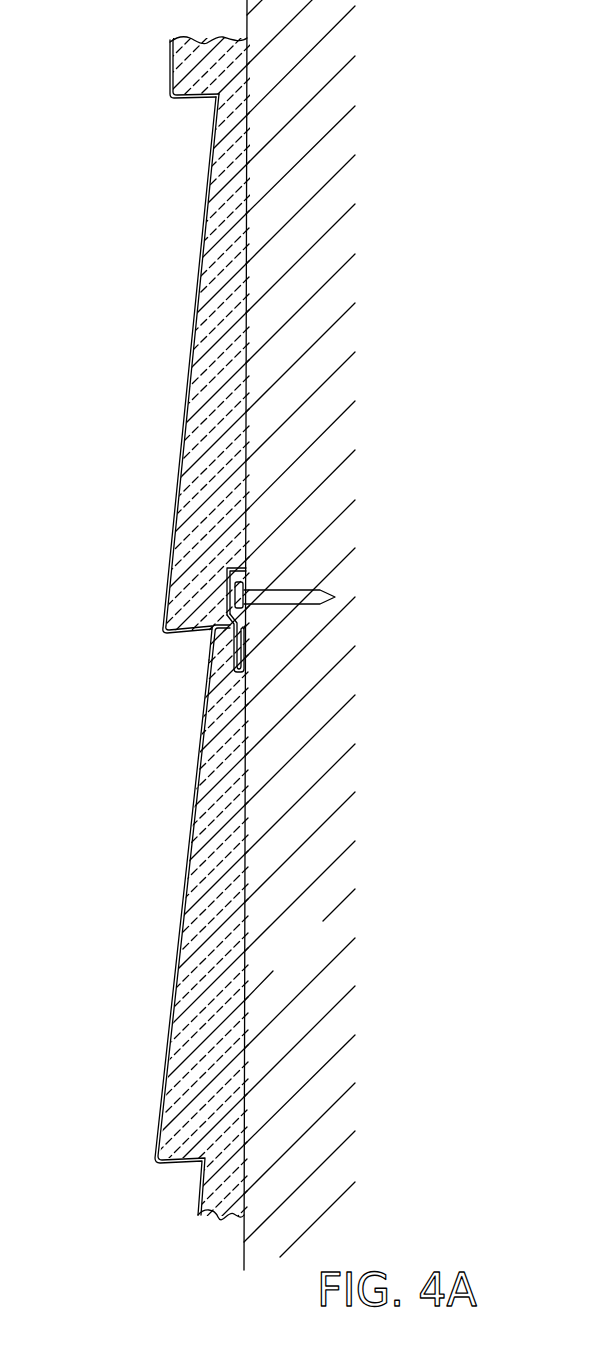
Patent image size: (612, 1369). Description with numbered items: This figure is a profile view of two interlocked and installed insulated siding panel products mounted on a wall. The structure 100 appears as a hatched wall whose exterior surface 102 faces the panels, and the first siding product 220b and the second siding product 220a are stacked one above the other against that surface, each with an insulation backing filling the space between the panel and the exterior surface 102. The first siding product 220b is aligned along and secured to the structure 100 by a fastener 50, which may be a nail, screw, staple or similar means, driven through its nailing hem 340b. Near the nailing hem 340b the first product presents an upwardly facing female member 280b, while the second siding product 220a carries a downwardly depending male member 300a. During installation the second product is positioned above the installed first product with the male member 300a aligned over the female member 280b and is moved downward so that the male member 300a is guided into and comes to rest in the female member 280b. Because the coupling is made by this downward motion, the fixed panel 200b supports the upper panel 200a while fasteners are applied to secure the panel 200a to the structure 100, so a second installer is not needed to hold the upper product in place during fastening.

The fastener 50 is at (325, 587).
The structure 100 is at (320, 957).
The exterior surface 102 is at (242, 1263).
The panel 200a is at (156, 371).
The fixed panel 200b is at (139, 963).
The second siding product 220a is at (164, 306).
The first siding product 220b is at (158, 811).
The female member 280b is at (212, 664).
The male member 300a is at (328, 593).
The nailing hem 340b is at (247, 575).